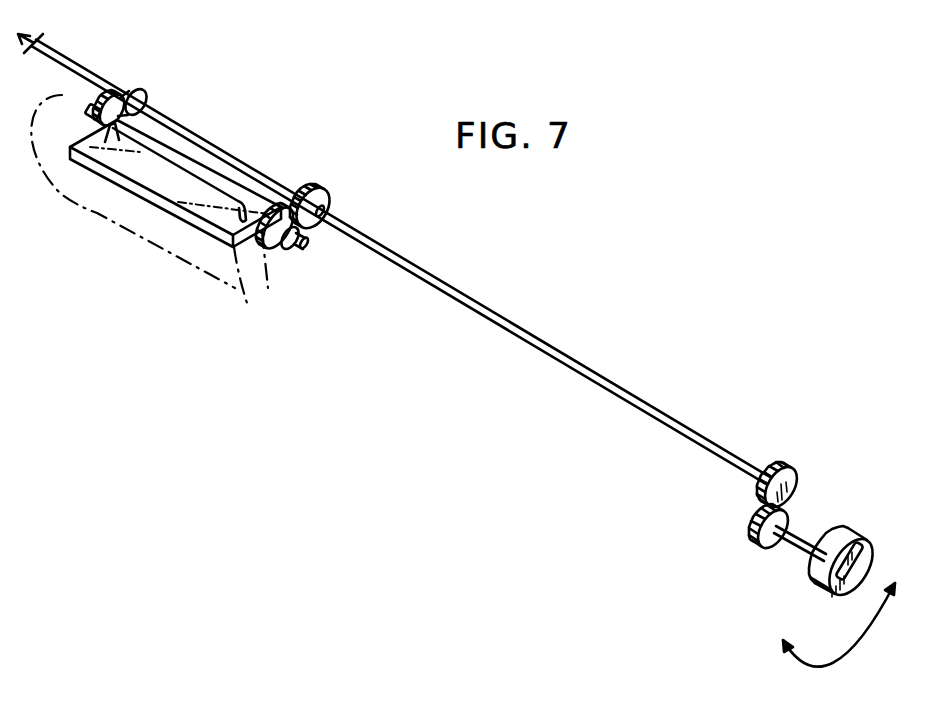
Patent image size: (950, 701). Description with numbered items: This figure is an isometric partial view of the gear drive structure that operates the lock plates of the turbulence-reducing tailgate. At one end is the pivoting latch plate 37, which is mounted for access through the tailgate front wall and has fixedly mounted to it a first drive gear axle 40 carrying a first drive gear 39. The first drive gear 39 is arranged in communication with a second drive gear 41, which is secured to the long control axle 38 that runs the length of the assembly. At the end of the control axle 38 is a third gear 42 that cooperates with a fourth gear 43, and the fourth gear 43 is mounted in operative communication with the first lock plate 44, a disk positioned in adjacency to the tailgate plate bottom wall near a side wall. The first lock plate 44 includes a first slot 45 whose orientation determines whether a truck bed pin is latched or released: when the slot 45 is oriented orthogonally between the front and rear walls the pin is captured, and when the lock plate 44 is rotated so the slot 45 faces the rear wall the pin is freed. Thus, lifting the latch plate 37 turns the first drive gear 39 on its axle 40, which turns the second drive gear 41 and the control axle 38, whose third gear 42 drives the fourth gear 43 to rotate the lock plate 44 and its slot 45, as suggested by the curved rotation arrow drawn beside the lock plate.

The pivoting latch plate 37 is at (190, 187).
The control axle 38 is at (517, 328).
The first drive gear 39 is at (99, 100).
The first drive gear axle 40 is at (303, 250).
The second drive gear 41 is at (326, 192).
The third gear 42 is at (787, 468).
The fourth gear 43 is at (762, 549).
The first lock plate 44 is at (833, 601).
The first slot 45 is at (838, 548).